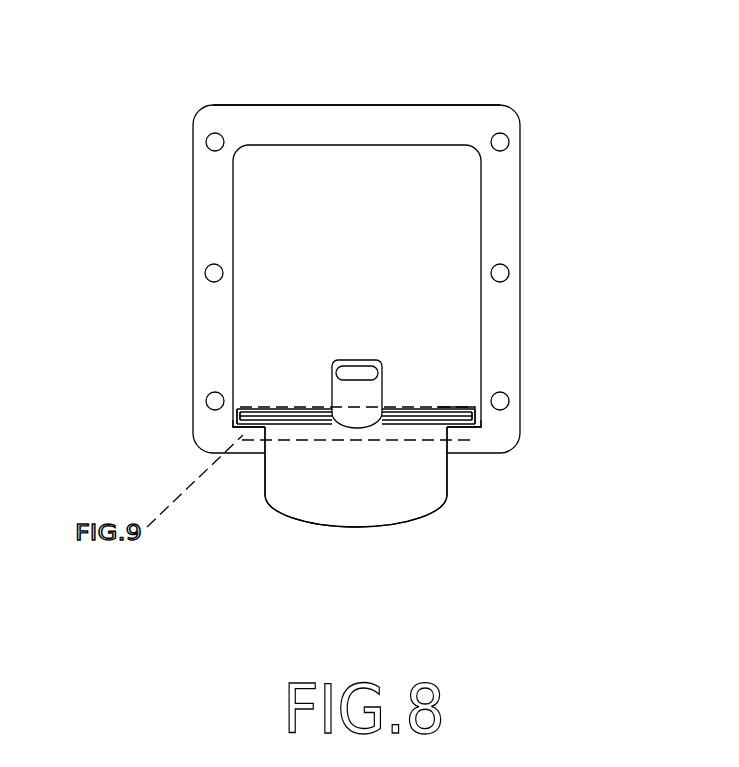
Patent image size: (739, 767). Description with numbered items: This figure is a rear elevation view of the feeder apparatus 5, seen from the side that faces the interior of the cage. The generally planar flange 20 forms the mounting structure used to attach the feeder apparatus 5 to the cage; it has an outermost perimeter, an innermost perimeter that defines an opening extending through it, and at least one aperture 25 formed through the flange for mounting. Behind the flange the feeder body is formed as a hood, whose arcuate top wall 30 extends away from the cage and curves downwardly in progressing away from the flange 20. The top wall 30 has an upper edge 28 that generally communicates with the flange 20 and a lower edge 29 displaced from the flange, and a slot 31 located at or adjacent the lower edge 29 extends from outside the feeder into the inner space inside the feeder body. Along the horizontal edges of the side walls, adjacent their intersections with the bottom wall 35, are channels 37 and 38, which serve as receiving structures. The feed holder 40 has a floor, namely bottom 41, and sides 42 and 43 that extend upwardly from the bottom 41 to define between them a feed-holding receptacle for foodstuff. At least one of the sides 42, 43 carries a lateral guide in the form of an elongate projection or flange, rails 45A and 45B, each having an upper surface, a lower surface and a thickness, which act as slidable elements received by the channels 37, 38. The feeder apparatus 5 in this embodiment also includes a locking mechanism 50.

The feeder apparatus 5 is at (370, 80).
The flange 20 is at (197, 122).
The aperture 25 is at (206, 273).
The upper edge 28 is at (417, 143).
The arcuate top wall 30 is at (455, 203).
The lower edge 29 is at (407, 417).
The slot 31 is at (441, 412).
The channel 37 is at (237, 417).
The channel 38 is at (477, 416).
The rail 45A is at (237, 425).
The rail 45B is at (460, 423).
The locking mechanism 50 is at (336, 392).
The bottom wall 35 is at (254, 447).
The feed holder 40 is at (300, 506).
The bottom 41 is at (360, 527).
The side 42 is at (263, 493).
The side 43 is at (450, 472).